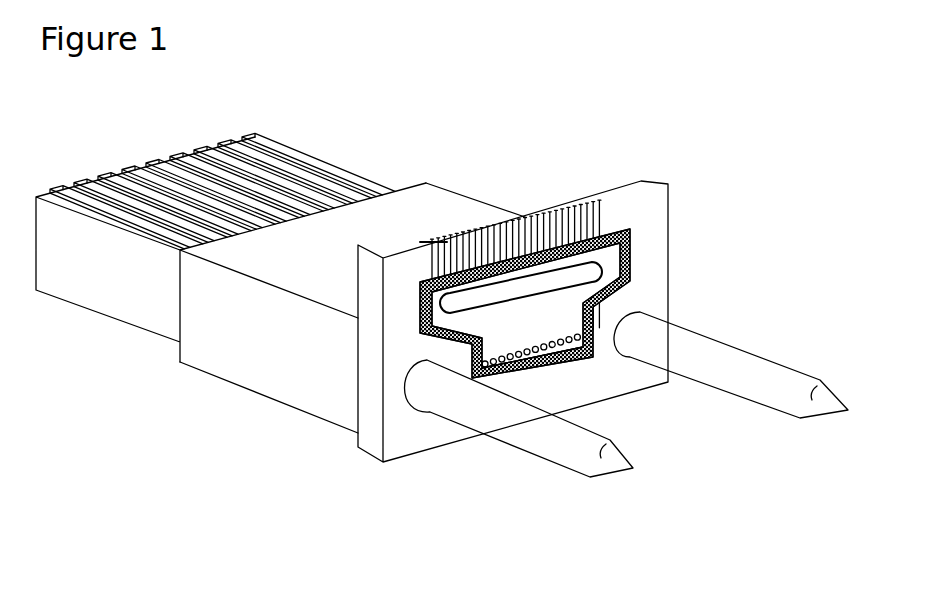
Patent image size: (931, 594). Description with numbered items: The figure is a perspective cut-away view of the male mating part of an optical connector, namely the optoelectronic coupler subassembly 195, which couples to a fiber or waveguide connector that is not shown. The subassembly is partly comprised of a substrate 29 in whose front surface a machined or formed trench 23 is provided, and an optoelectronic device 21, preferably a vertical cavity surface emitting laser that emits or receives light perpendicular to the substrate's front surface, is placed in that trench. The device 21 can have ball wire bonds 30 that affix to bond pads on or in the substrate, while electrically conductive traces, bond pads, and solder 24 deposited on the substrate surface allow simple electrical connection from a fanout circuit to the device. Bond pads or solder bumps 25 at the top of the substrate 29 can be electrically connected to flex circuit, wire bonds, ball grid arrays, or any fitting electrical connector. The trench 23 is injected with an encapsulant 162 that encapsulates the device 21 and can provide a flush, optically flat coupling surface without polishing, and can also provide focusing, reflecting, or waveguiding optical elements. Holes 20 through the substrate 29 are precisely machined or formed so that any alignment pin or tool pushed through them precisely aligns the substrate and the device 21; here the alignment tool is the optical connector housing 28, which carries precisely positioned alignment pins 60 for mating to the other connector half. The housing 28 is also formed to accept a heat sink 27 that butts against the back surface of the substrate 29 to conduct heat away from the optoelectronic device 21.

The optoelectronic coupler subassembly 195 is at (775, 105).
The heat sink 27 is at (330, 165).
The optical connector housing 28 is at (248, 318).
The substrate 29 is at (373, 402).
The holes 20 is at (622, 307).
The bond pads or solder bumps 25 is at (527, 215).
The electrically conductive traces, bond pads, and solder 24 is at (540, 267).
The trench 23 is at (627, 250).
The encapsulant 162 is at (437, 292).
The ball wire bonds 30 is at (597, 328).
The optoelectronic device 21 is at (527, 363).
The alignment pins 60 is at (792, 365).